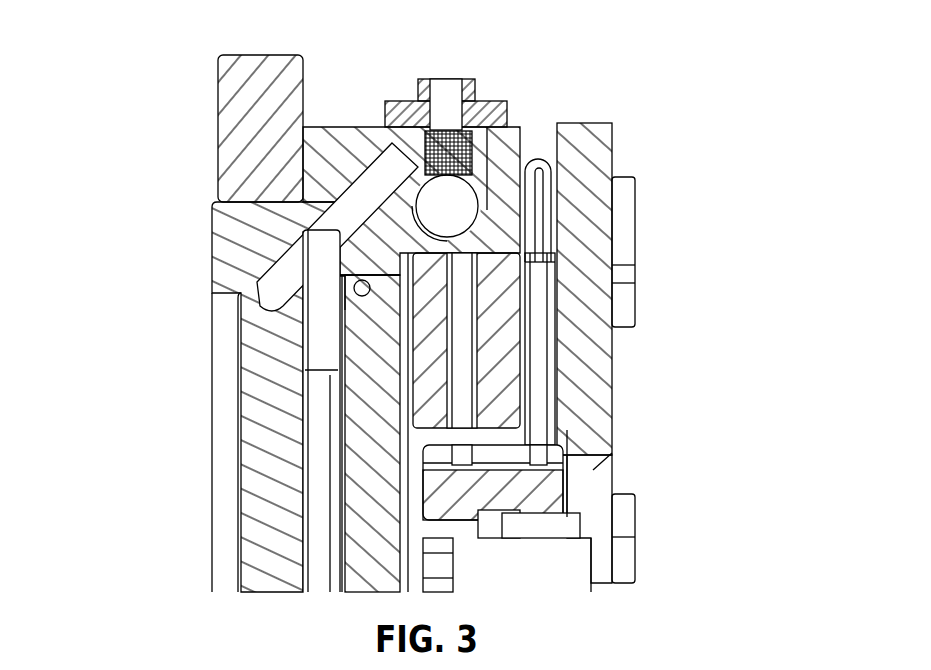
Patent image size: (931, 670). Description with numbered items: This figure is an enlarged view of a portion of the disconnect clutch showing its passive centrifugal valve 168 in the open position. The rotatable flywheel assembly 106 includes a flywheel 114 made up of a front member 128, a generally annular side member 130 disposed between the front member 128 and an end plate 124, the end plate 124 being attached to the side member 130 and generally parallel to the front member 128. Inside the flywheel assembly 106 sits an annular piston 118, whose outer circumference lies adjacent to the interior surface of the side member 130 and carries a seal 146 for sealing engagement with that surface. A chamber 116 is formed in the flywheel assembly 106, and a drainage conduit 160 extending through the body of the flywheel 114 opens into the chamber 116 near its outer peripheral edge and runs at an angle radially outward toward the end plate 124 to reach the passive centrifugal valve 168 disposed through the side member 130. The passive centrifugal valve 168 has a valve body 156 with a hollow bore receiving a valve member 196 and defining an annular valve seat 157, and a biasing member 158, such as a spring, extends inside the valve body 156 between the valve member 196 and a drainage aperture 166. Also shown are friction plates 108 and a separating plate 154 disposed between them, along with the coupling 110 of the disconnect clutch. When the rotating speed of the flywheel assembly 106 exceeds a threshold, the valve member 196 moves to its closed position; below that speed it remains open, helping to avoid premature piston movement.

The flywheel assembly 106 is at (332, 74).
The side member 130 is at (340, 142).
The drainage aperture 166 is at (447, 86).
The valve body 156 is at (478, 113).
The passive centrifugal valve 168 is at (551, 64).
The biasing member 158 is at (452, 150).
The valve seat 157 is at (478, 177).
The end plate 124 is at (590, 150).
The valve member 196 is at (455, 207).
The drainage conduit 160 is at (380, 198).
The flywheel 114 is at (227, 234).
The seal 146 is at (360, 290).
The front member 128 is at (275, 452).
The chamber 116 is at (318, 483).
The piston 118 is at (358, 530).
The friction plate 108 is at (540, 347).
The separating plate 154 is at (505, 380).
The coupling 110 is at (555, 485).